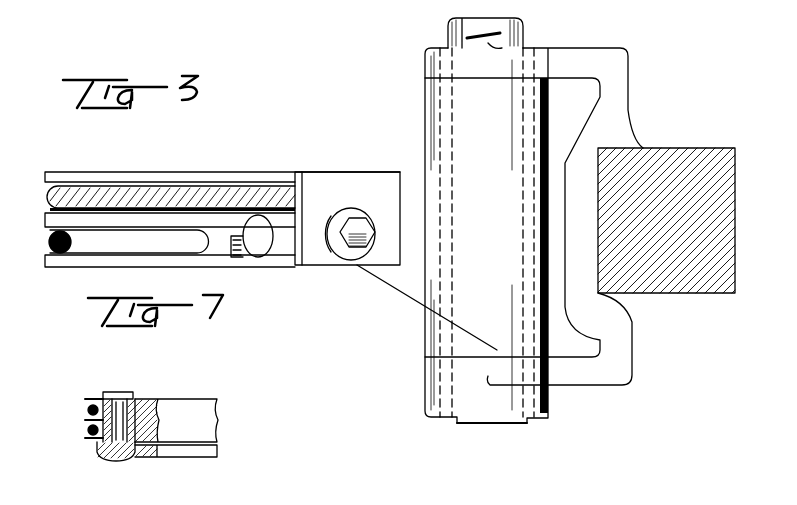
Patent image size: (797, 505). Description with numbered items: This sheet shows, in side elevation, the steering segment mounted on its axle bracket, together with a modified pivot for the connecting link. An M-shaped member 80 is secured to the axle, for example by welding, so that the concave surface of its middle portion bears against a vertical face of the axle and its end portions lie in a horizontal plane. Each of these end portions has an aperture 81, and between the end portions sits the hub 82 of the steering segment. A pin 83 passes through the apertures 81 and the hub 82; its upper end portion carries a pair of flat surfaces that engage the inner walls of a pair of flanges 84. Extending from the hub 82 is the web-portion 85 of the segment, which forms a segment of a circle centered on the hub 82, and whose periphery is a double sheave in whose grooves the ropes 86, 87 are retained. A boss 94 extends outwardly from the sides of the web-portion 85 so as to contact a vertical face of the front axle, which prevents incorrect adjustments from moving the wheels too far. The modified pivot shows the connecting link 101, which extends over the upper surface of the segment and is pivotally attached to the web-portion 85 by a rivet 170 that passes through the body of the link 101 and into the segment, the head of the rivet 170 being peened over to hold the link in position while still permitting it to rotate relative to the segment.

In FIG. 5, the M-shaped member 80 is at (588, 382).
In FIG. 5, the aperture 81 is at (440, 68).
In FIG. 5, the hub 82 is at (440, 100).
In FIG. 5, the pin 83 is at (510, 424).
In FIG. 5, the flanges 84 is at (468, 23).
In FIG. 5, the web-portion 85 is at (177, 173).
In FIG. 7, the web-portion 85 is at (214, 378).
In FIG. 5, the rope 86 is at (49, 243).
In FIG. 7, the rope 86 is at (85, 430).
In FIG. 5, the rope 87 is at (250, 170).
In FIG. 7, the rope 87 is at (85, 410).
In FIG. 5, the boss 94 is at (256, 252).
In FIG. 7, the connecting link 101 is at (188, 456).
In FIG. 7, the rivet 170 is at (122, 460).